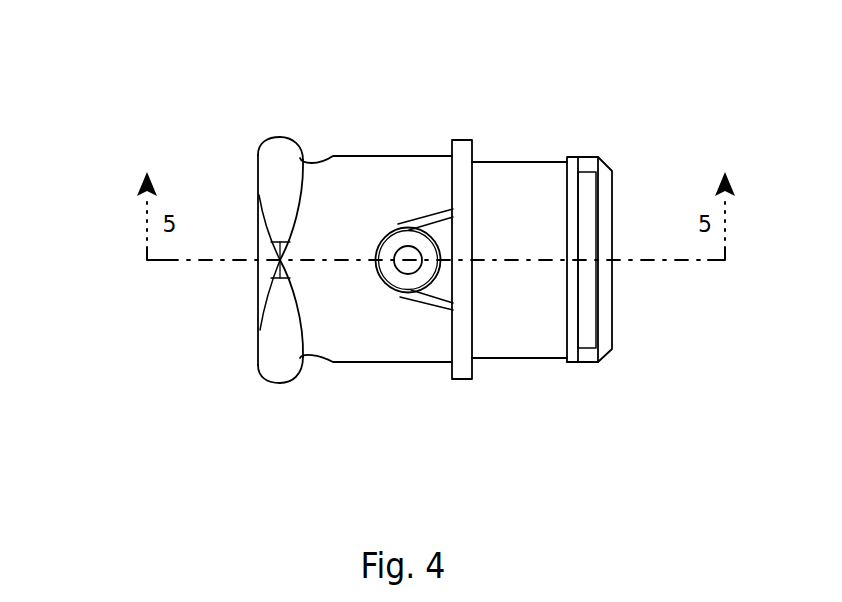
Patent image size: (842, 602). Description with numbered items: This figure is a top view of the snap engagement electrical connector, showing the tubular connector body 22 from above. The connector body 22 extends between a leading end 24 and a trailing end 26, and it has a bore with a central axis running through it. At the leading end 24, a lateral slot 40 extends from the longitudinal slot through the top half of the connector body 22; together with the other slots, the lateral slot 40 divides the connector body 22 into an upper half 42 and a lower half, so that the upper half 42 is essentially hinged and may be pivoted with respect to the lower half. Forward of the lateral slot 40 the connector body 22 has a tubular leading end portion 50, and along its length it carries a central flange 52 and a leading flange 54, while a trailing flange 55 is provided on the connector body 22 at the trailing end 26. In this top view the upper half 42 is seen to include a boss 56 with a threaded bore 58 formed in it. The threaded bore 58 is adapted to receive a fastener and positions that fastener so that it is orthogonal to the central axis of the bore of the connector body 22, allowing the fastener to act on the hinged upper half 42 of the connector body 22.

The tubular connector body 22 is at (180, 137).
The leading end 24 is at (613, 288).
The trailing end 26 is at (257, 290).
The lateral slot 40 is at (587, 183).
The upper half 42 is at (508, 304).
The tubular leading end portion 50 is at (607, 358).
The central flange 52 is at (461, 140).
The leading flange 54 is at (572, 365).
The trailing flange 55 is at (279, 142).
The boss 56 is at (378, 240).
The threaded bore 58 is at (405, 267).